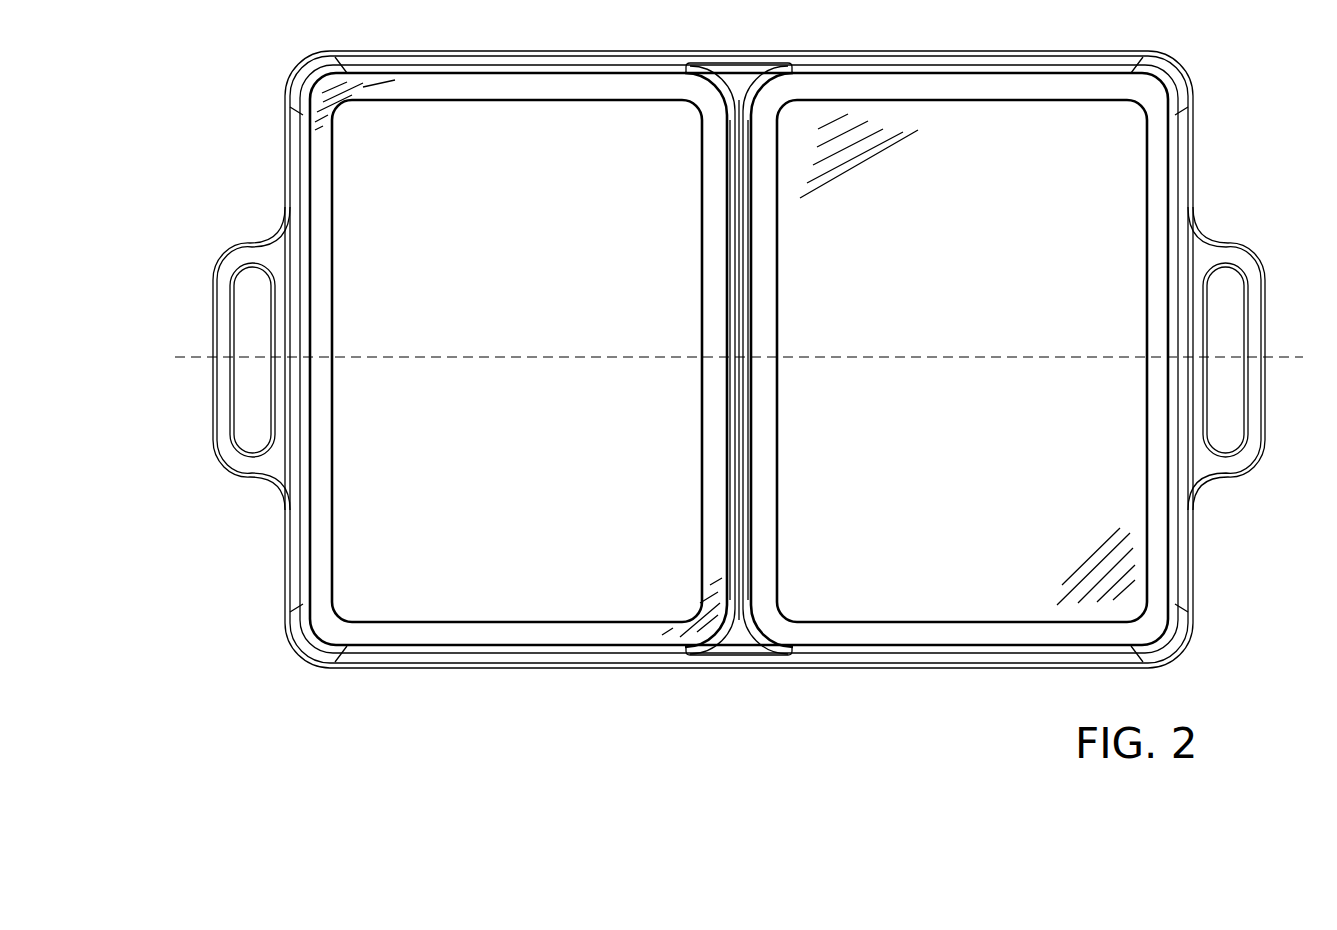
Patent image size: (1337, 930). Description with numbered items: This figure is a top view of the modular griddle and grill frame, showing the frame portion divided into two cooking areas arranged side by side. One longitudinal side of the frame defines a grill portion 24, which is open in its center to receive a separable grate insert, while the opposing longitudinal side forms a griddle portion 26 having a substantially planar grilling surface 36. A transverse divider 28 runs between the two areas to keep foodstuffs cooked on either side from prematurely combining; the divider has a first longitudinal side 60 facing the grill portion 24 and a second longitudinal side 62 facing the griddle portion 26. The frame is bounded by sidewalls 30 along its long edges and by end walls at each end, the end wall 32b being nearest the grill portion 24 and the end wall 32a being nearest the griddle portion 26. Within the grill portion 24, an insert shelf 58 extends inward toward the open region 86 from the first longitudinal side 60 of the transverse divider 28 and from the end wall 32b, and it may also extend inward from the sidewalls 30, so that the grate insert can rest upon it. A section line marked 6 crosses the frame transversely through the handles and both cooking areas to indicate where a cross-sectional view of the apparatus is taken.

The section line 6- 6 is at (1303, 265).
The grill portion 24 is at (290, 670).
The griddle portion 26 is at (1198, 665).
The transverse divider 28 is at (727, 196).
The sidewalls 30 is at (575, 51).
The end wall 32a is at (1190, 520).
The end wall 32b is at (308, 475).
The grilling surface 36 is at (932, 290).
The insert shelf 58 is at (538, 101).
The first longitudinal side 60 is at (727, 405).
The second longitudinal side 62 is at (753, 415).
The open region 86 is at (493, 282).